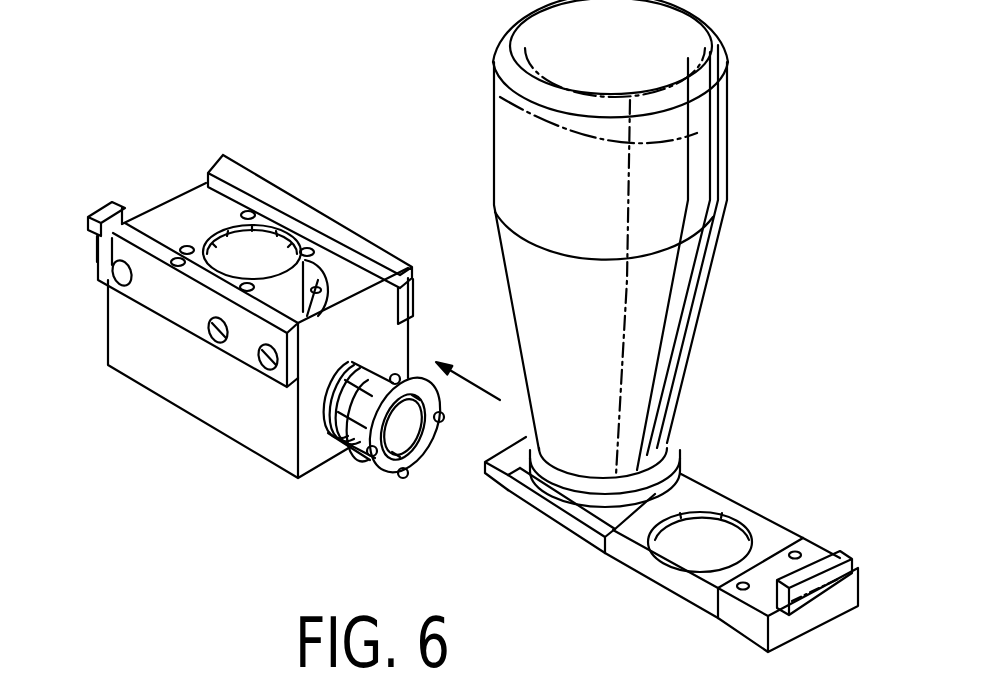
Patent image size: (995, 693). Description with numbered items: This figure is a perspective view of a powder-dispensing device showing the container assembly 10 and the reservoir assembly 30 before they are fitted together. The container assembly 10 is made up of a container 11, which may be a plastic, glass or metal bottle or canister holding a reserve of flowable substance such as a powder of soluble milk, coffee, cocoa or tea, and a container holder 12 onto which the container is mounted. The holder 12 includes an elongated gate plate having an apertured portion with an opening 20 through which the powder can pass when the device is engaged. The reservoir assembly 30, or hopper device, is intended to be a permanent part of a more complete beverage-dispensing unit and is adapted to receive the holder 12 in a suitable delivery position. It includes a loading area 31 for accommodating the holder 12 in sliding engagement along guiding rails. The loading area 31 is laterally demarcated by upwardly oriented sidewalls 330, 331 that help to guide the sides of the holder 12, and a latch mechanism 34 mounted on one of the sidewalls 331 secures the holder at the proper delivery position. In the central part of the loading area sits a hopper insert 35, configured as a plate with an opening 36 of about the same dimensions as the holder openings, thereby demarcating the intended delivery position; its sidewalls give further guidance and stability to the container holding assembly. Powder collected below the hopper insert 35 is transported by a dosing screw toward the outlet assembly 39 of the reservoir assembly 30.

The container assembly 10 is at (806, 211).
The container 11 is at (477, 170).
The container holder 12 is at (601, 562).
The opening 20 is at (716, 529).
The reservoir assembly 30 is at (134, 445).
The loading area 31 is at (162, 222).
The latch mechanism 34 is at (178, 268).
The hopper insert 35 is at (198, 212).
The opening 36 is at (276, 246).
The outlet assembly 39 is at (388, 490).
The sidewall 330 is at (377, 258).
The sidewall 331 is at (249, 355).